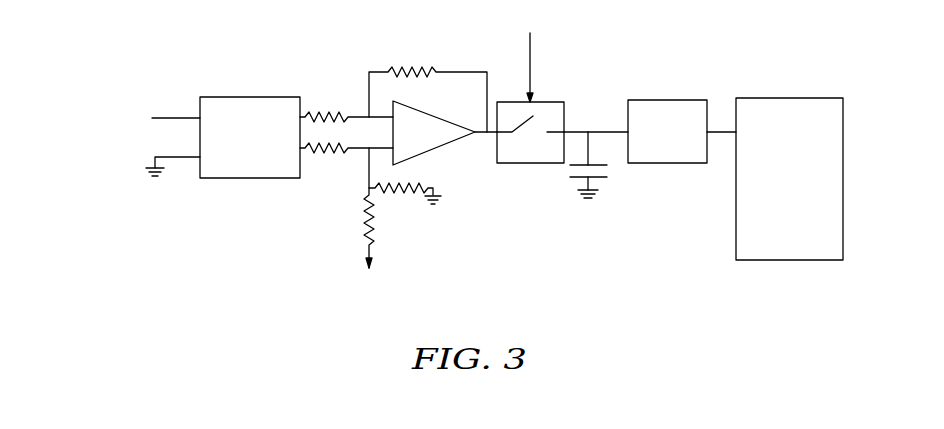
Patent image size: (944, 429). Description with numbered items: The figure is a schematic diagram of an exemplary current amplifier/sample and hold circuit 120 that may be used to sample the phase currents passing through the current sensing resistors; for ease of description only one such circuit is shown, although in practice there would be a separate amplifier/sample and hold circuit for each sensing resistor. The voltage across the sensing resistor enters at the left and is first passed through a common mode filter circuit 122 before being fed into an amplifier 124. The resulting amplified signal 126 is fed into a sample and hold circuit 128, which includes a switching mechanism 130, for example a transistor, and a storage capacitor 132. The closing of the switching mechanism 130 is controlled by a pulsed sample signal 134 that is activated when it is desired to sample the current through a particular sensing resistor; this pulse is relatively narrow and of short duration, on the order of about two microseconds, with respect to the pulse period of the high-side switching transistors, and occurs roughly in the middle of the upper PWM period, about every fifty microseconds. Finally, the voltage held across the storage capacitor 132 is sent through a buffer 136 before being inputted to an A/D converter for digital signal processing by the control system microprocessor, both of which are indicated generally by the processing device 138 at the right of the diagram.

The current amplifier/sample and hold circuit 120 is at (192, 33).
The common mode filter circuit 122 is at (250, 97).
The amplifier 124 is at (436, 147).
The amplified signal 126 is at (490, 133).
The sample and hold circuit 128 is at (565, 115).
The switching mechanism 130 is at (517, 164).
The storage capacitor 132 is at (601, 179).
The pulsed sample signal 134 is at (530, 62).
The buffer 136 is at (687, 100).
The processing device 138 is at (822, 98).